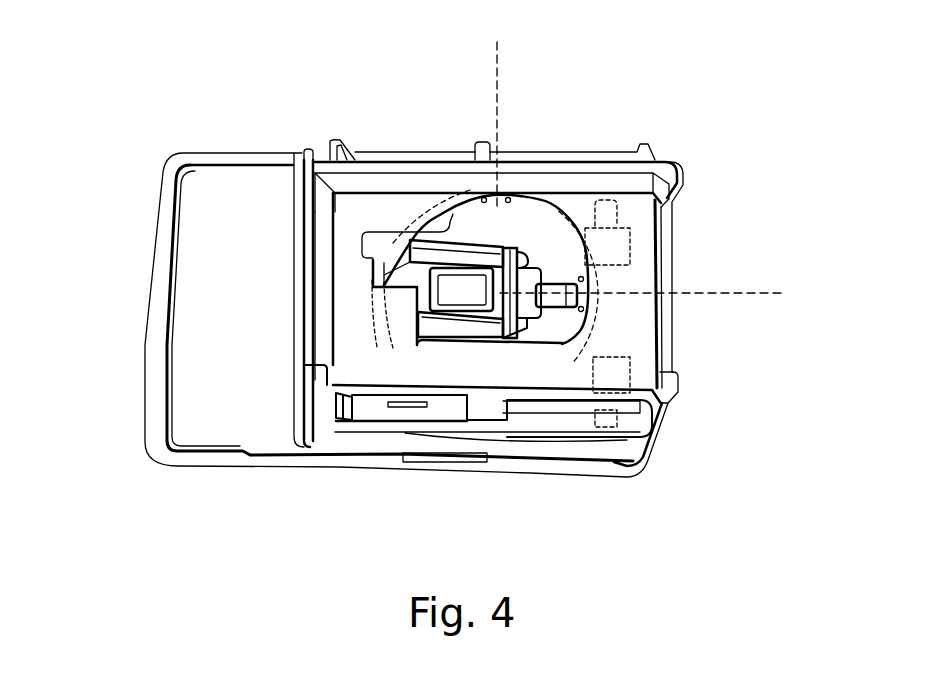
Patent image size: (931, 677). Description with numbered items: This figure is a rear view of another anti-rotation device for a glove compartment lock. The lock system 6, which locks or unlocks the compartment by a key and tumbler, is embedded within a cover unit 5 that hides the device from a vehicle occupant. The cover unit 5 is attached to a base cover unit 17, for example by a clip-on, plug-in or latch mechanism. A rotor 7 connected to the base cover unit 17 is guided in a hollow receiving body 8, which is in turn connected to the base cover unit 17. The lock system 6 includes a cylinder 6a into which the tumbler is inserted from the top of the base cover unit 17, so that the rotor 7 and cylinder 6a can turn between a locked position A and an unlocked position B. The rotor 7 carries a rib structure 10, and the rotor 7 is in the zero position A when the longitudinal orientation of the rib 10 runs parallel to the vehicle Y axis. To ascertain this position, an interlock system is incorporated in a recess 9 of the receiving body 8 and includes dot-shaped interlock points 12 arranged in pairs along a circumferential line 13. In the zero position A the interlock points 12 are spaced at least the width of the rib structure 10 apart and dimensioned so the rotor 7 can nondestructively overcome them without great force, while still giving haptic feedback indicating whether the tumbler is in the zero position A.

The cover unit 5 is at (167, 257).
The base cover unit 17 is at (188, 398).
The hollow receiving body 8 is at (374, 345).
The lock system 6 is at (479, 268).
The cylinder 6a is at (657, 242).
The recess 9 is at (393, 242).
The rotor 7 is at (518, 254).
The rib structure 10 is at (548, 318).
The interlock points 12 is at (586, 281).
The circumferential line 13 is at (565, 255).
The locked position / zero position A is at (643, 309).
The unlocked position B is at (493, 113).